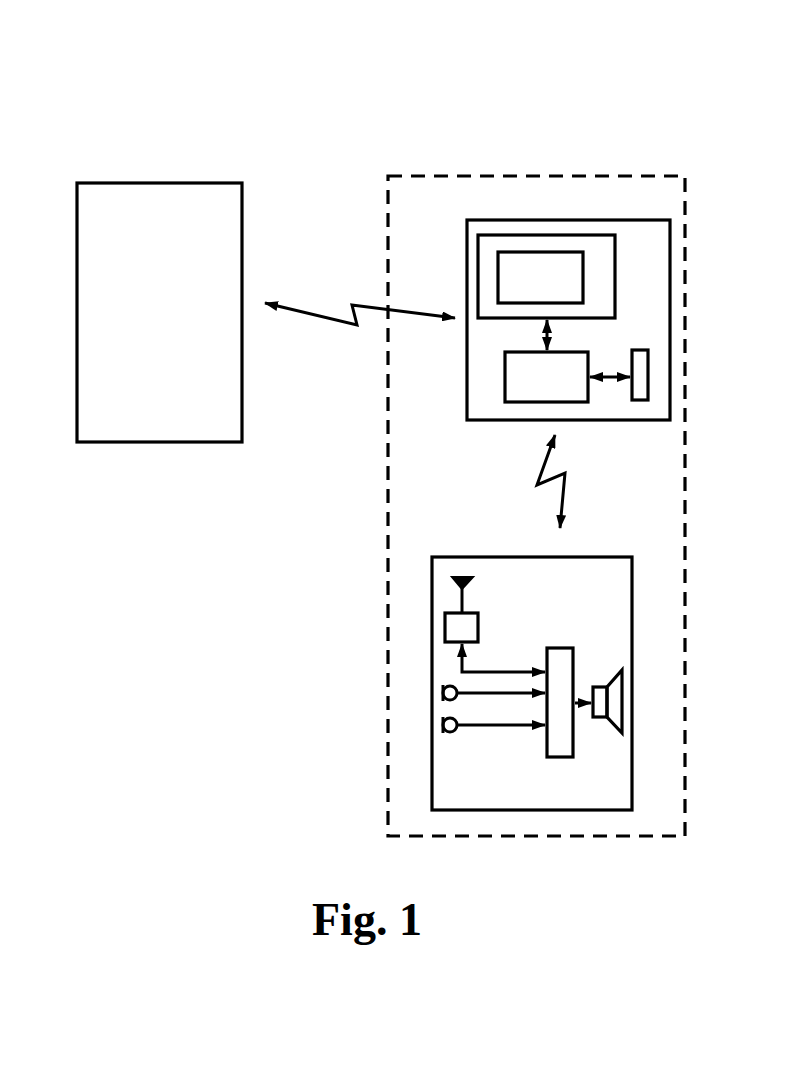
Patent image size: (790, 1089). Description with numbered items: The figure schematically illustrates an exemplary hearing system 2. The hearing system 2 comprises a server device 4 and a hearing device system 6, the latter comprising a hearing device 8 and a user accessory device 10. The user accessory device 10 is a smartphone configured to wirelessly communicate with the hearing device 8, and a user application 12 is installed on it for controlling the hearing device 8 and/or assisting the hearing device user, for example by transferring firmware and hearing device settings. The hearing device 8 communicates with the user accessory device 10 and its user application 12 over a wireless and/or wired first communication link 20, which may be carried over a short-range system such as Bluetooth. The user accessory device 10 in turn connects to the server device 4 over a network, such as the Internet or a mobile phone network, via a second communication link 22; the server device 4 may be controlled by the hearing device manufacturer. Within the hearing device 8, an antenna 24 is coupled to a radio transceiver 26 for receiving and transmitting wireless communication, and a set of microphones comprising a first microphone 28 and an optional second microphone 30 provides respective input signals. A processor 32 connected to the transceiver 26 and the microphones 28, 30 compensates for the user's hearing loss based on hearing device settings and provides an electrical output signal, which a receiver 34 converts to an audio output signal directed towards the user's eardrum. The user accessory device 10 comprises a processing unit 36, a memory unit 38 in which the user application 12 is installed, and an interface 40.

The hearing system 2 is at (296, 92).
The server device 4 is at (97, 183).
The hearing device system 6 is at (510, 176).
The hearing device 8 is at (593, 810).
The user accessory device 10 is at (613, 220).
The user application 12 is at (548, 252).
The first communication link 20 is at (540, 480).
The second communication link 22 is at (308, 315).
The antenna 24 is at (452, 577).
The radio transceiver 26 is at (445, 625).
The first microphone 28 is at (443, 687).
The second microphone 30 is at (443, 728).
The processor 32 is at (560, 648).
The receiver 34 is at (610, 678).
The processing unit 36 is at (505, 370).
The memory unit 38 is at (478, 267).
The interface 40 is at (633, 400).